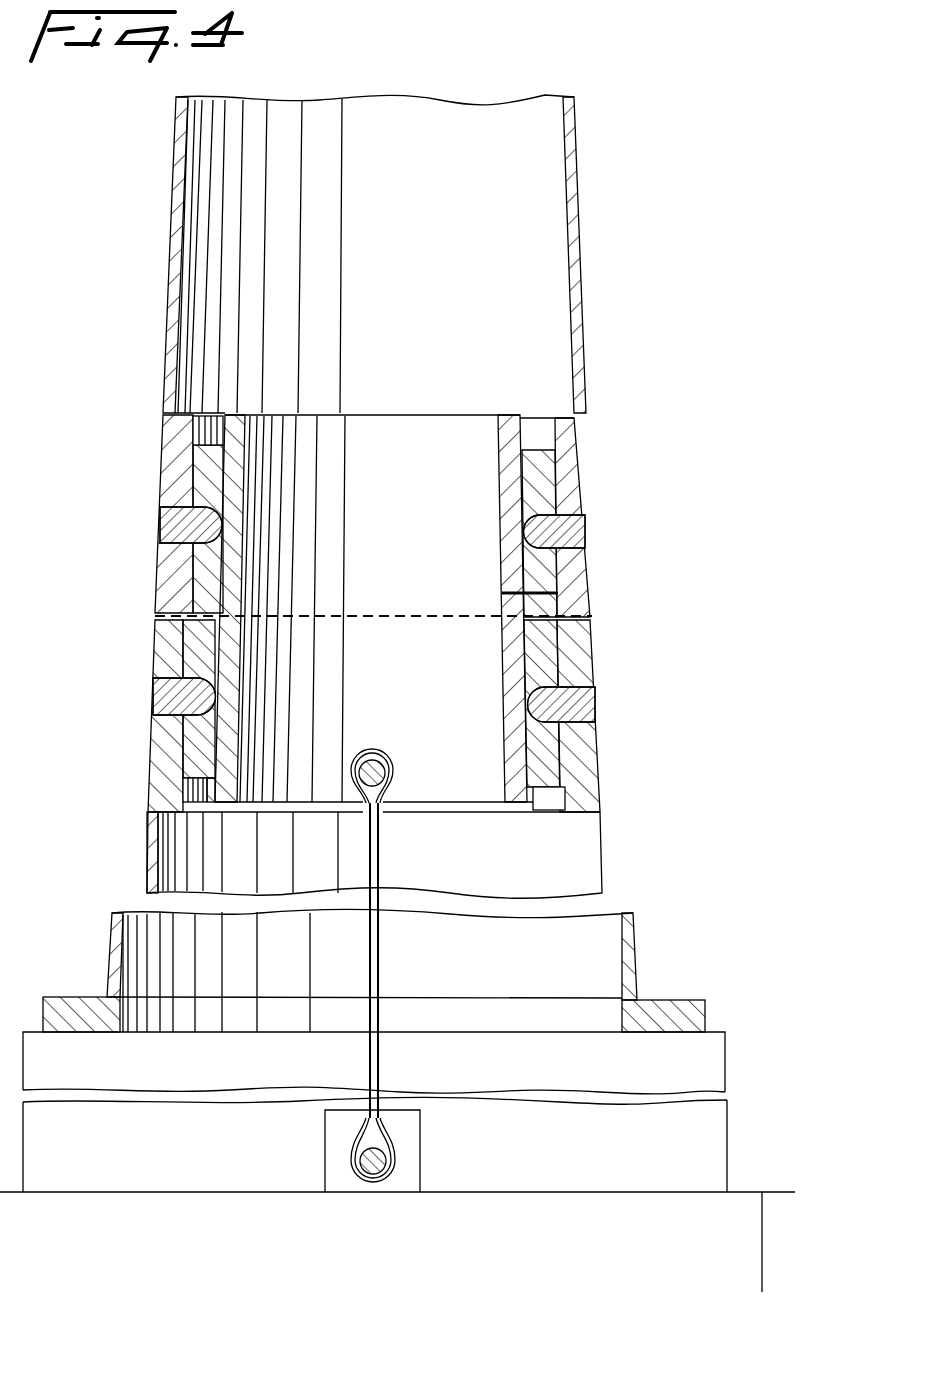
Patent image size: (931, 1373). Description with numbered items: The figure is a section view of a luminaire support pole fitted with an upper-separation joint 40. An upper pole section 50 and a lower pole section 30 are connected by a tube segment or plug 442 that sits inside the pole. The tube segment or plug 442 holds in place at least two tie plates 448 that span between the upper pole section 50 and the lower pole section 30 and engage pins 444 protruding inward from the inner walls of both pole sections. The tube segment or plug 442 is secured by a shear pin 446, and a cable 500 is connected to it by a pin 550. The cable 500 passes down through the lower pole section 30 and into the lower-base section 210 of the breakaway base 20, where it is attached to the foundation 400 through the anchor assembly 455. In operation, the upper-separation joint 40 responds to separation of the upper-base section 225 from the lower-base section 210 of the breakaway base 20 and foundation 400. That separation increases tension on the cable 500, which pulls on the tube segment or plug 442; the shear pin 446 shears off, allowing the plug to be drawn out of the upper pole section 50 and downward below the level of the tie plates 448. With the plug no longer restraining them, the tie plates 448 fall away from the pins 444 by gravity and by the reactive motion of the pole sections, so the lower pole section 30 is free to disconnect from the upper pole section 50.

The upper pole section 50 is at (575, 183).
The tube segment or plug 442 is at (458, 414).
The upper-separation joint 40 is at (630, 433).
The pins 444 is at (162, 520).
The shear pin 446 is at (540, 593).
The tie plates 448 is at (550, 760).
The pin 550 is at (375, 758).
The cable 500 is at (377, 973).
The lower pole section 30 is at (633, 948).
The upper-base section 225 is at (718, 1072).
The lower-base section 210 is at (712, 1130).
The breakaway base 20 is at (744, 1165).
The foundation 400 is at (762, 1253).
The anchor assembly 455 is at (388, 1178).